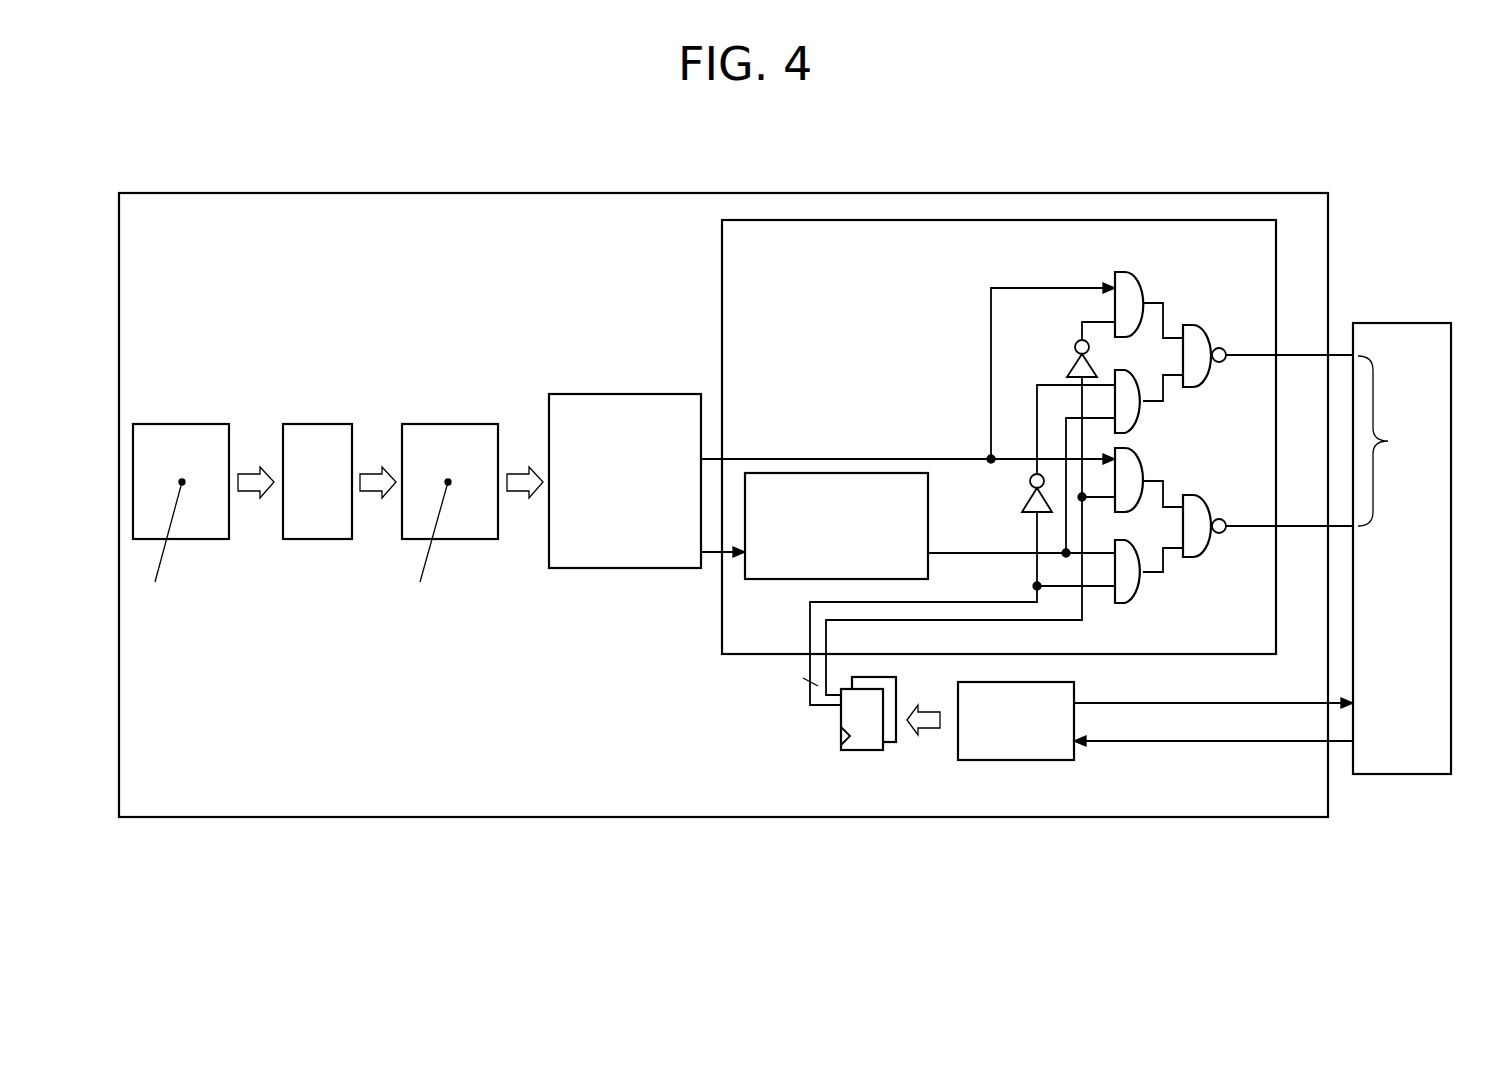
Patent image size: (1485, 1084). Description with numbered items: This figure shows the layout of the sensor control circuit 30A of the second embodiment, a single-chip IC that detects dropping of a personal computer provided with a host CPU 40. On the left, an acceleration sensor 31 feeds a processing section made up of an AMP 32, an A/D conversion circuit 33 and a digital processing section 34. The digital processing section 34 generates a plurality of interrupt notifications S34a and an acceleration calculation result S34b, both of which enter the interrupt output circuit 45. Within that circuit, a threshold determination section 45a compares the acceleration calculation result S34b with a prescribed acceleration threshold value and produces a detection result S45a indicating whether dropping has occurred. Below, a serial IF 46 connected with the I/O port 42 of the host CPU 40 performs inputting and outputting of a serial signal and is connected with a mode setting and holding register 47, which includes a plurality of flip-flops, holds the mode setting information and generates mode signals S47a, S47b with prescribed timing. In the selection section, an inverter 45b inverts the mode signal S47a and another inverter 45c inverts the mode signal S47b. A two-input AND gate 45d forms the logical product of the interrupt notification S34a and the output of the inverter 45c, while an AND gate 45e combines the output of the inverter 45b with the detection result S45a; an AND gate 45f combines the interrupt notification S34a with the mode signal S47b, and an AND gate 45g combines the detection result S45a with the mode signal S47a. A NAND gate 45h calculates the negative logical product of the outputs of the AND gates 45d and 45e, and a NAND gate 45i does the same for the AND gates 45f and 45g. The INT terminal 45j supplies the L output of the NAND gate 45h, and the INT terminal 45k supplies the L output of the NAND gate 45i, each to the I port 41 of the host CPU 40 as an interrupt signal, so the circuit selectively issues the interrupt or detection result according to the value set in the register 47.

The sensor control circuit 30A is at (290, 193).
The acceleration sensor 31 is at (188, 424).
The AMP 32 is at (325, 424).
The A/D conversion circuit 33 is at (463, 424).
The digital processing section 34 is at (657, 394).
The interrupt output circuit 45 is at (795, 220).
The threshold determination section 45a is at (790, 579).
The inverter 45b is at (1026, 503).
The inverter 45c is at (1070, 373).
The 2-input AND gate 45d is at (1140, 283).
The 2-input AND gate 45e is at (1140, 418).
The 2-input AND gate 45f is at (1140, 470).
The 2-input AND gate 45g is at (1144, 590).
The 2-input NAND gate 45h is at (1205, 327).
The 2-input NAND gate 45i is at (1206, 497).
The INT terminal 45j is at (1297, 356).
The INT terminal 45k is at (1291, 526).
The interrupt notification S34a is at (898, 453).
The acceleration calculation result S34b is at (712, 554).
The detection result S45a is at (1010, 547).
The mode signal S47a is at (1010, 597).
The mode signal S47b is at (1084, 621).
The host CPU 40 is at (1405, 323).
The I port 41 is at (1395, 441).
The I/O port 42 is at (1234, 704).
The serial IF 46 is at (1000, 762).
The mode setting and holding register 47 is at (852, 752).